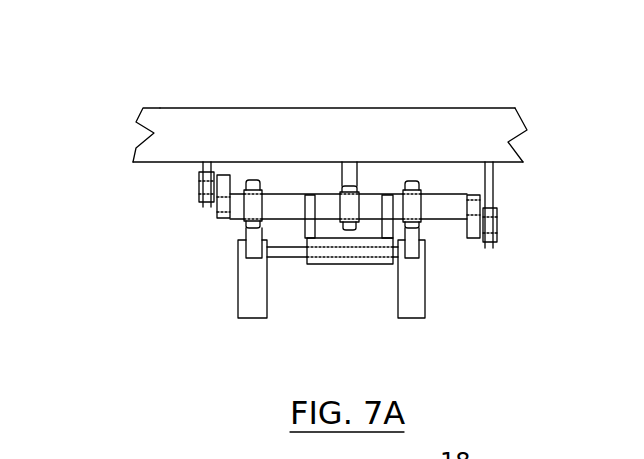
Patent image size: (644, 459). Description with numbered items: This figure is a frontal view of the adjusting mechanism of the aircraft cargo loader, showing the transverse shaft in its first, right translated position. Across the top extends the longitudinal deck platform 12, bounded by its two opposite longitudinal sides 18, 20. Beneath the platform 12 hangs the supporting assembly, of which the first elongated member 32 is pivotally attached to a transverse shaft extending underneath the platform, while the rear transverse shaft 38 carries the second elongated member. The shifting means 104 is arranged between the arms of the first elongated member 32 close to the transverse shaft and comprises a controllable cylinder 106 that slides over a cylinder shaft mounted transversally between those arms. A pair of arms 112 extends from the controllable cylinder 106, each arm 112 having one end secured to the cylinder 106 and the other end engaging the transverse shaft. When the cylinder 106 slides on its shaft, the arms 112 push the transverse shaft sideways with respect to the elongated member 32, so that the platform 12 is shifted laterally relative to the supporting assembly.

The longitudinal deck platform 12 is at (462, 109).
The longitudinal side 18 is at (160, 107).
The longitudinal side 20 is at (515, 109).
The first elongated member 32 is at (426, 307).
The rear transverse shaft 38 is at (447, 222).
The shifting means 104 is at (197, 265).
The controllable cylinder 106 is at (350, 264).
The arms 112 is at (388, 193).